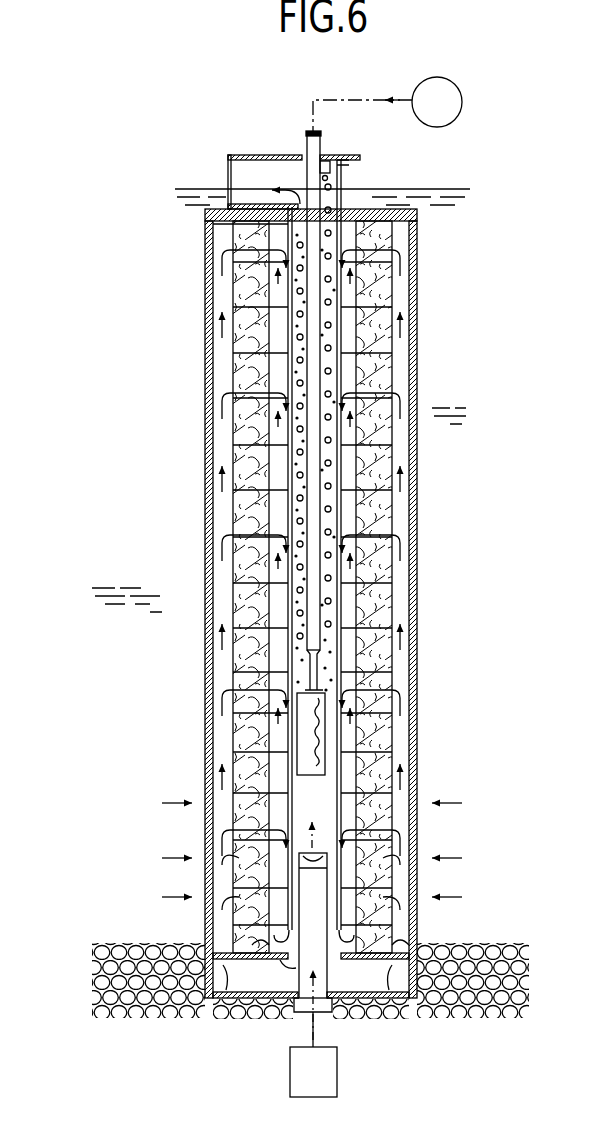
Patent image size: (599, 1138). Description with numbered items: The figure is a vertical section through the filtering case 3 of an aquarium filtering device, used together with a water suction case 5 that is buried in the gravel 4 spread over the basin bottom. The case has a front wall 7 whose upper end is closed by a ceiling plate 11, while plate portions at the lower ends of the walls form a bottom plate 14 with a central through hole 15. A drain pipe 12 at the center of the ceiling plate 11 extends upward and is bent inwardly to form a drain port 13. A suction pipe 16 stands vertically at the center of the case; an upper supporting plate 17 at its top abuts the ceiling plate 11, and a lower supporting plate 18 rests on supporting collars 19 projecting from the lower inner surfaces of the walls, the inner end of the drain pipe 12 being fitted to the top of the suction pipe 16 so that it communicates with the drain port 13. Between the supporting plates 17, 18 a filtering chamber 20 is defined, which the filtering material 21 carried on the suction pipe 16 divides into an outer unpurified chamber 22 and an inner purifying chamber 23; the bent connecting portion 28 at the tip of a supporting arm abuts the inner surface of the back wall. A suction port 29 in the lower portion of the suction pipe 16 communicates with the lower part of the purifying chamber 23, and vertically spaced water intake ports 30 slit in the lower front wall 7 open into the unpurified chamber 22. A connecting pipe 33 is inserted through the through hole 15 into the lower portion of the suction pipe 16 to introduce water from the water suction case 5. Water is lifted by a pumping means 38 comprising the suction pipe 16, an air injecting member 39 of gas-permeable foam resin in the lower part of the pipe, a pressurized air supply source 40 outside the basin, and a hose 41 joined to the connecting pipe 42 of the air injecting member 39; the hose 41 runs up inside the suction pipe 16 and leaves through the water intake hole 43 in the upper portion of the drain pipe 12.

The filtering case 3 is at (205, 633).
The gravel 4 is at (480, 946).
The water suction case 5 is at (321, 1084).
The front wall 7 is at (413, 528).
The ceiling plate 11 is at (371, 210).
The drain pipe 12 is at (262, 145).
The drain port 13 is at (228, 166).
The bottom plate 14 is at (381, 1000).
The through hole 15 is at (299, 1006).
The suction pipe 16 is at (345, 633).
The upper supporting plate 17 is at (398, 226).
The lower supporting plate 18 is at (404, 946).
The supporting collar 19 is at (404, 970).
The filtering chamber 20 is at (213, 500).
The filtering material 21 is at (252, 562).
The unpurified chamber 22 is at (405, 722).
The purifying chamber 23 is at (348, 749).
The connecting portion 28 is at (355, 262).
The suction port 29 is at (334, 1004).
The water intake ports 30 is at (411, 846).
The connecting pipe 33 is at (296, 968).
The pumping means 38 is at (387, 498).
The air injecting member 39 is at (312, 770).
The pressurized air supply source 40 is at (447, 118).
The hose 41 is at (313, 418).
The connecting pipe 42 is at (341, 662).
The water intake hole 43 is at (326, 162).